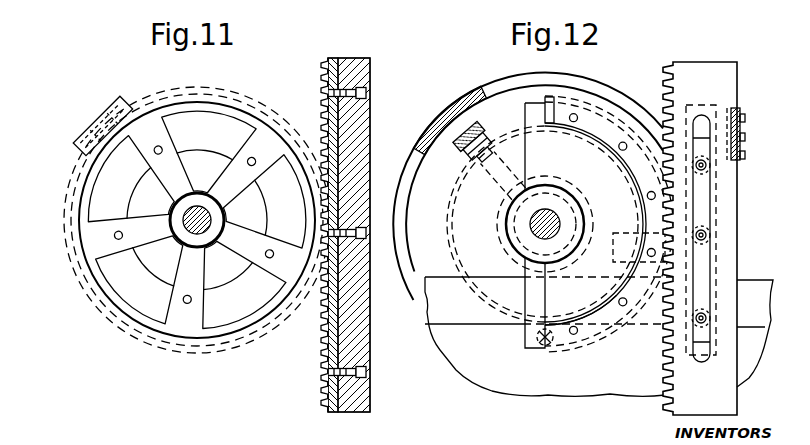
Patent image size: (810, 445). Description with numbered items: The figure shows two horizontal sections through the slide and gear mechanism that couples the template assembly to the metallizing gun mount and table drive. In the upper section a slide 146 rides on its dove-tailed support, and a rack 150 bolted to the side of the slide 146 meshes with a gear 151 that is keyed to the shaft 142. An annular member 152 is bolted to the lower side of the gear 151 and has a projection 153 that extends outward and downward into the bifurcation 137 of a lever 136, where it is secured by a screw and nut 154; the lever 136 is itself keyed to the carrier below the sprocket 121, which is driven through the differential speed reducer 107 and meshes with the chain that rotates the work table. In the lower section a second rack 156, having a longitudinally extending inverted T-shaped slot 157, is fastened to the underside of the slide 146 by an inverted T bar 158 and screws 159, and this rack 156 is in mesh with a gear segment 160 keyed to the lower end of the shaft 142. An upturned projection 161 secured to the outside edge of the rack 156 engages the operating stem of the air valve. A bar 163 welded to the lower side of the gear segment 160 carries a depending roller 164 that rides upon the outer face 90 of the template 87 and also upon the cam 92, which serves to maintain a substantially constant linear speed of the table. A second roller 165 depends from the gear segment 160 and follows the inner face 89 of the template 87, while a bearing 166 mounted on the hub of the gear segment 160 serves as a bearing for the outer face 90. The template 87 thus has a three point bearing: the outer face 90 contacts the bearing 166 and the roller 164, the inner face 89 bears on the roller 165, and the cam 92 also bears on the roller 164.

In FIG. 12, the template 87 is at (440, 310).
In FIG. 12, the inner face 89 is at (478, 325).
In FIG. 12, the outer face 90 is at (451, 256).
In FIG. 12, the cam 92 is at (768, 280).
In FIG. 12, the differential speed reducer 107 is at (636, 93).
In FIG. 12, the sprocket 121 is at (456, 180).
In FIG. 12, the lever 136 is at (526, 165).
In FIG. 12, the bifurcation 137 is at (524, 128).
In FIG. 11, the shaft 142 is at (200, 212).
In FIG. 12, the shaft 142 is at (533, 226).
In FIG. 11, the slide 146 is at (357, 70).
In FIG. 11, the rack 150 is at (322, 66).
In FIG. 11, the gear 151 is at (233, 348).
In FIG. 11, the annular member 152 is at (140, 282).
In FIG. 11, the projection 153 is at (96, 124).
In FIG. 12, the projection 153 is at (453, 127).
In FIG. 12, the screw and nut 154 is at (466, 153).
In FIG. 12, the second rack 156 is at (710, 76).
In FIG. 12, the inverted T-shaped slot 157 is at (712, 121).
In FIG. 12, the inverted T bar 158 is at (704, 184).
In FIG. 12, the screws 159 is at (706, 237).
In FIG. 12, the gear segment 160 is at (602, 326).
In FIG. 12, the upturned projection 161 is at (746, 138).
In FIG. 12, the bar 163 is at (612, 227).
In FIG. 12, the roller 164 is at (690, 262).
In FIG. 12, the second roller 165 is at (541, 346).
In FIG. 12, the bearing 166 is at (513, 259).